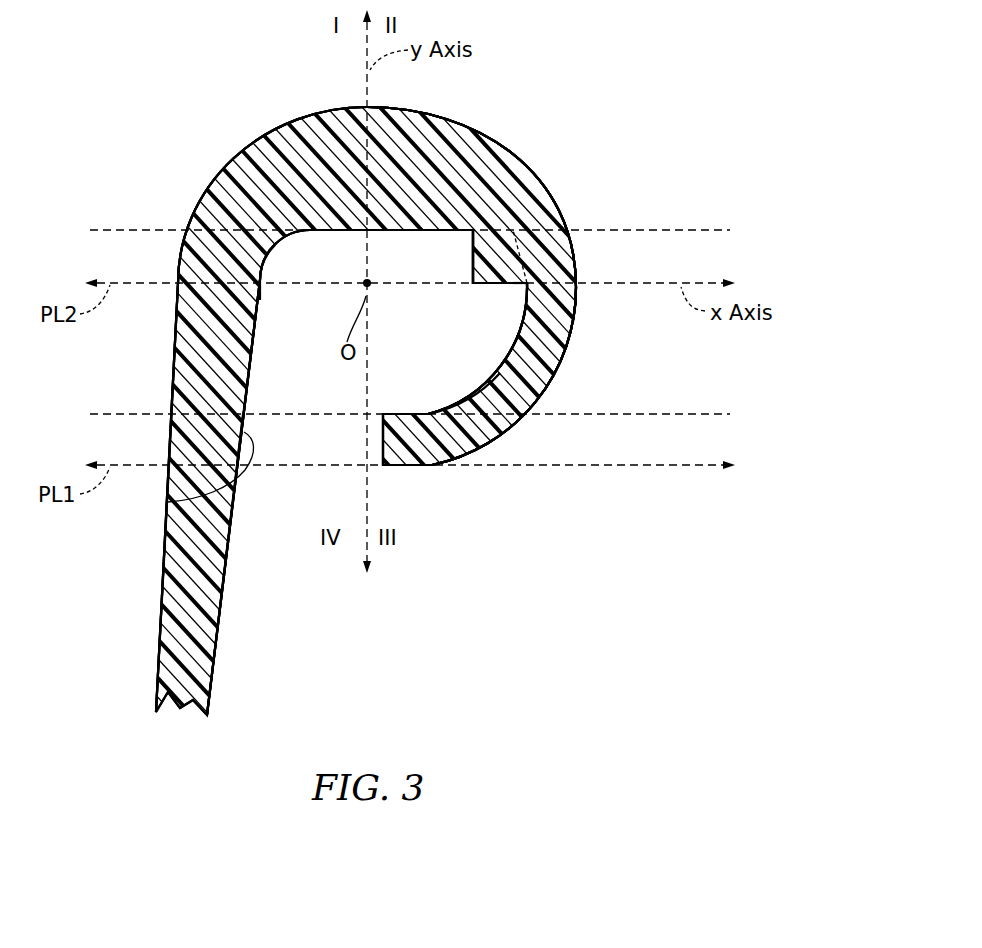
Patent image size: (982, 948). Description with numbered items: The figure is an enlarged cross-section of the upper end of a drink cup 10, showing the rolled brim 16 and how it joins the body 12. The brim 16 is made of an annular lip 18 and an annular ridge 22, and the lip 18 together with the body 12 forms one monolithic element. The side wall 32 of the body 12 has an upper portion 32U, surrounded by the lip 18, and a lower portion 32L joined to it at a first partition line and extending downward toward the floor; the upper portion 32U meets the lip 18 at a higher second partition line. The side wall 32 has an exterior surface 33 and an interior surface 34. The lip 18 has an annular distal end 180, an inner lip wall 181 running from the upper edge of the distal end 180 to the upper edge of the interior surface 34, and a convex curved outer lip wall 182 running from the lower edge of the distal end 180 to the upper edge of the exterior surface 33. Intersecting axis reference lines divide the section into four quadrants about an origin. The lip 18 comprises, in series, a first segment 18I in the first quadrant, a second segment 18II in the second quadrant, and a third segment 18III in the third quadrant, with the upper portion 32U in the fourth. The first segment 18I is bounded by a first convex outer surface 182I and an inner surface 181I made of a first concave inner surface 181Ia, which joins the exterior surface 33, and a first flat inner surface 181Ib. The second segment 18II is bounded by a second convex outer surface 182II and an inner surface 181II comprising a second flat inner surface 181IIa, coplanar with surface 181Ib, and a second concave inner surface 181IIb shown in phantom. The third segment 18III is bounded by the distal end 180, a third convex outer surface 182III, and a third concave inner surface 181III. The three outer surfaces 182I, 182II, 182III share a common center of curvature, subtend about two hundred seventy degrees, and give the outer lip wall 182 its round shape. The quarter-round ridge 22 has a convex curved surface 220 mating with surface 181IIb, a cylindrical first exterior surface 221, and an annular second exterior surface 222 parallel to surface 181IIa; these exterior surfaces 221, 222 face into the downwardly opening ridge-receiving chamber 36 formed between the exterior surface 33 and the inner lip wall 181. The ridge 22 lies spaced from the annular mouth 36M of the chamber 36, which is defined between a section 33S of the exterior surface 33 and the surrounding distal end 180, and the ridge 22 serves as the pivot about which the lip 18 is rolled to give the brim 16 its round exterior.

The drink cup 10 is at (662, 137).
The body 12 is at (231, 613).
The rolled brim 16 is at (594, 157).
The annular lip 18 is at (484, 126).
The annular ridge 22 is at (553, 200).
The side wall 32 is at (218, 705).
The upper portion of side wall 32U is at (232, 380).
The lower portion of side wall 32L is at (177, 550).
The exterior surface of side wall 33 is at (260, 322).
The section of exterior surface 33S is at (168, 502).
The interior surface of side wall 34 is at (177, 310).
The ridge-receiving chamber 36 is at (440, 352).
The annular mouth 36M is at (305, 440).
The annular distal end 180 is at (388, 460).
The inner lip wall 181 is at (503, 331).
The inner surface of first segment 181I is at (294, 233).
The first concave curved inner surface 181Ia is at (273, 260).
The first flat inner surface 181Ib is at (357, 232).
The inner surface of second segment 181II is at (380, 231).
The second flat inner surface 181IIa is at (431, 232).
The second concave inner surface 181IIb is at (527, 253).
The third concave curved inner surface 181III is at (428, 410).
The outer lip wall 182 is at (235, 156).
The first convex curved outer surface 182I is at (293, 128).
The second convex curved outer surface 182II is at (505, 148).
The third convex curved outer surface 182III is at (552, 378).
The first segment of annular lip 18I is at (231, 204).
The second segment of annular lip 18II is at (455, 247).
The third segment of annular lip 18III is at (513, 414).
The convex curved surface 220 is at (515, 263).
The first exterior surface 221 is at (462, 284).
The second exterior surface 222 is at (527, 304).